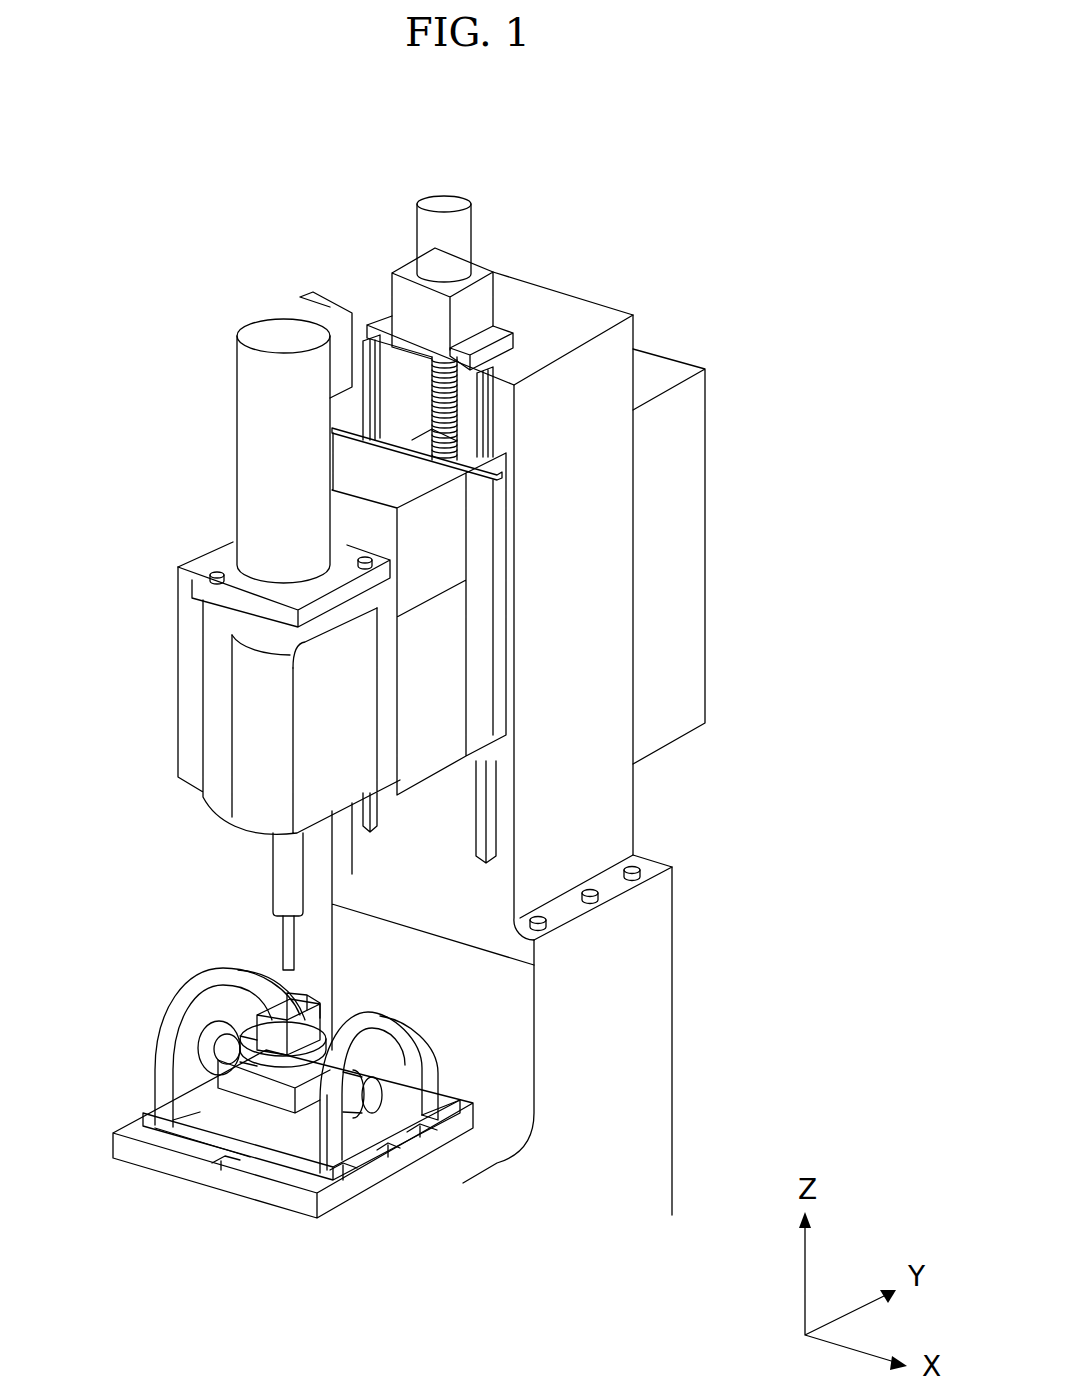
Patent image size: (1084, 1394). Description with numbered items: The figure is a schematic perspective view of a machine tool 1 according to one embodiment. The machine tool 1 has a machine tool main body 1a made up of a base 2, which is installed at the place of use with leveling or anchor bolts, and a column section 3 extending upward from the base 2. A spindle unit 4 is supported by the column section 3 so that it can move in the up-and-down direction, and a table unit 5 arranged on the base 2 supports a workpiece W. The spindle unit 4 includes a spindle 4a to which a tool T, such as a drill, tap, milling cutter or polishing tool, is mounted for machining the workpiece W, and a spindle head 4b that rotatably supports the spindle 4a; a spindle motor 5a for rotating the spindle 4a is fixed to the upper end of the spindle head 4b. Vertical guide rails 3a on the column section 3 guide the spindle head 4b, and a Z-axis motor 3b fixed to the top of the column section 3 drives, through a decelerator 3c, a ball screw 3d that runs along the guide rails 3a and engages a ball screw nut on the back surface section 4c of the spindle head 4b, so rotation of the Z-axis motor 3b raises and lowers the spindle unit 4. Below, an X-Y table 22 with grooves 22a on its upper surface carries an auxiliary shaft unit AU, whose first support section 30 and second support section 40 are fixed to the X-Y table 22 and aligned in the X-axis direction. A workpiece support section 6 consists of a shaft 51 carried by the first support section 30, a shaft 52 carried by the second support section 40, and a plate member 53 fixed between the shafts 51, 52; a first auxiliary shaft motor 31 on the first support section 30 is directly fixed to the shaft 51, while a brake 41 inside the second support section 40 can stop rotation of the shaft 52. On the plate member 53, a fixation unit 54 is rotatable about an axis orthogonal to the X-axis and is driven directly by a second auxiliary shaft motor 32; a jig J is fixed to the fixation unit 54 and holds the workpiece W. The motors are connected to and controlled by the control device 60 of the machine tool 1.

The machine tool 1 is at (668, 172).
The machine tool main body 1a is at (636, 801).
The base 2 is at (526, 1222).
The column section 3 is at (600, 521).
The guide rails 3a is at (368, 415).
The Z-axis motor 3b is at (416, 215).
The decelerator 3c is at (488, 297).
The ball screw 3d is at (432, 372).
The spindle unit 4 is at (148, 600).
The spindle 4a is at (273, 860).
The spindle head 4b is at (442, 688).
The back surface section 4c is at (470, 462).
The table unit 5 is at (130, 1220).
The spindle motor 5a is at (240, 336).
The workpiece support section 6 is at (178, 686).
The X-Y table 22 is at (305, 1218).
The grooves 22a is at (463, 1140).
The first support section 30 is at (378, 1012).
The first auxiliary shaft motor 31 is at (462, 1108).
The second auxiliary shaft motor 32 is at (230, 1122).
The second support section 40 is at (210, 990).
The brake 41 is at (205, 1022).
The shaft 51 is at (375, 1090).
The shaft 52 is at (240, 1044).
The plate member 53 is at (212, 1052).
The fixation unit 54 is at (275, 1060).
The control device 60 is at (706, 600).
The auxiliary shaft unit AU is at (148, 998).
The jig J is at (296, 1044).
The tool T is at (283, 941).
The workpiece W is at (262, 1015).